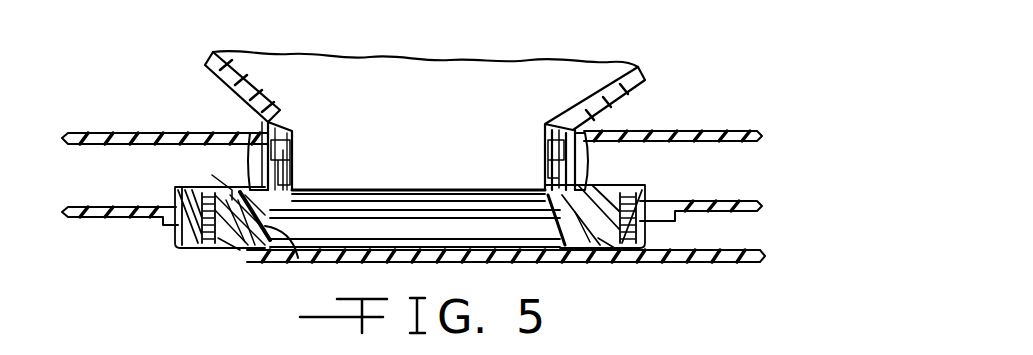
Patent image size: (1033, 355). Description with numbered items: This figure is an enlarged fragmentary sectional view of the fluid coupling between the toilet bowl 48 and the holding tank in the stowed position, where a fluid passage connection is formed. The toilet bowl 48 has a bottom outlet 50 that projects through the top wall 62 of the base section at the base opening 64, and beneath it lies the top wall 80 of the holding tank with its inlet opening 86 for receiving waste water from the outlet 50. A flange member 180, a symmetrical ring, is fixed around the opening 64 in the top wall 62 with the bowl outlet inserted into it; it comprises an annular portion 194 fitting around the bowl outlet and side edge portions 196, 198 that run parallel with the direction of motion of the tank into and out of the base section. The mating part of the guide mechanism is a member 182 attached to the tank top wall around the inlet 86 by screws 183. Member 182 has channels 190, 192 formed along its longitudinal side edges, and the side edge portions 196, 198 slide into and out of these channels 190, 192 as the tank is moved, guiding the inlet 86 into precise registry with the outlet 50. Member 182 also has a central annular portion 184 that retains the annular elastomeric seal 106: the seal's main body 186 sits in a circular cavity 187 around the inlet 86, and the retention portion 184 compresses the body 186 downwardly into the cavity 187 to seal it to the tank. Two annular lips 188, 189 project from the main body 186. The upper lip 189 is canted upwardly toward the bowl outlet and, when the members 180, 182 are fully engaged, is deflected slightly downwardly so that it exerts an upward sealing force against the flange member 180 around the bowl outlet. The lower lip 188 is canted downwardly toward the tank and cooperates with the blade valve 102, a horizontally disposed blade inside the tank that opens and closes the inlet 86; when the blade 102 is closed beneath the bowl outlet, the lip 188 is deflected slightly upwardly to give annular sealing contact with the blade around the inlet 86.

The toilet bowl 48 is at (262, 112).
The bottom outlet 50 is at (298, 182).
The top wall 62 is at (731, 130).
The base opening 64 is at (300, 175).
The top wall 80 is at (723, 200).
The inlet opening 86 is at (233, 257).
The blade valve 102 is at (628, 258).
The annular seal 106 is at (223, 247).
The flange member 180 is at (400, 190).
The member 182 is at (677, 160).
The screws 183 is at (195, 186).
The central annular portion 184 is at (212, 175).
The main body 186 is at (236, 248).
The circular cavity 187 is at (303, 258).
The sealing lip 188 is at (575, 246).
The sealing lip 189 is at (572, 198).
The channel 190 is at (566, 125).
The channel 192 is at (250, 185).
The annular portion 194 is at (545, 163).
The side edge portion 196 is at (590, 190).
The side edge portion 198 is at (245, 183).